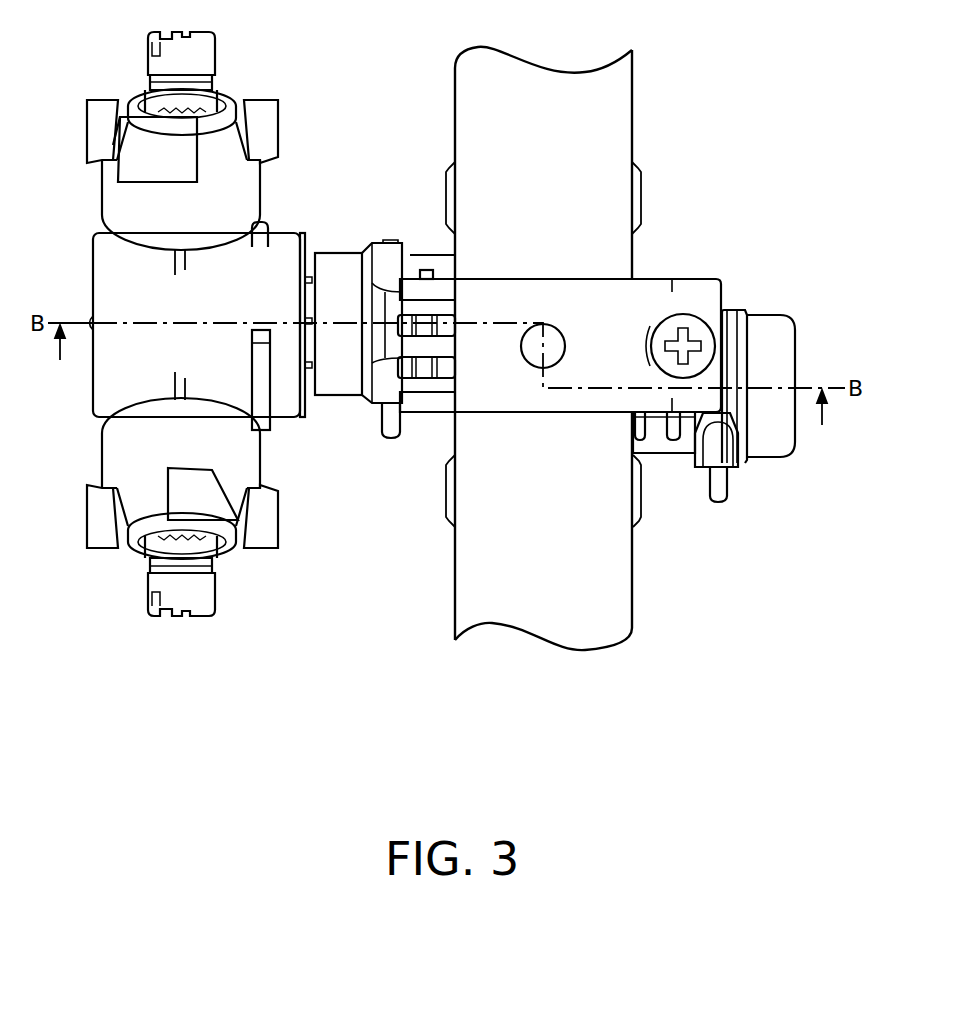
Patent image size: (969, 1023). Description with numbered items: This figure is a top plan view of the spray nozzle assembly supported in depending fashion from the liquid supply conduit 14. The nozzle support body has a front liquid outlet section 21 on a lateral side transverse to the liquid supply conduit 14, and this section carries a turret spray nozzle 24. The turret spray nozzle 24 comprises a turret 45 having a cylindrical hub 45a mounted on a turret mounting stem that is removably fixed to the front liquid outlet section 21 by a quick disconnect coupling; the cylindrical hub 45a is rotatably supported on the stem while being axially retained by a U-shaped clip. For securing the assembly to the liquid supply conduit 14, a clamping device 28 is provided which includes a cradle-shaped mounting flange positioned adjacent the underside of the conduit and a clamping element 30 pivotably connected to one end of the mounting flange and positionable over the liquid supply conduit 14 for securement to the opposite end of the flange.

The liquid supply conduit 14 is at (633, 130).
The front liquid outlet section 21 is at (430, 262).
The turret spray nozzle 24 is at (92, 405).
The clamping device 28 is at (652, 284).
The clamping element 30 is at (478, 393).
The turret 45 is at (110, 253).
The cylindrical hub 45a is at (338, 210).